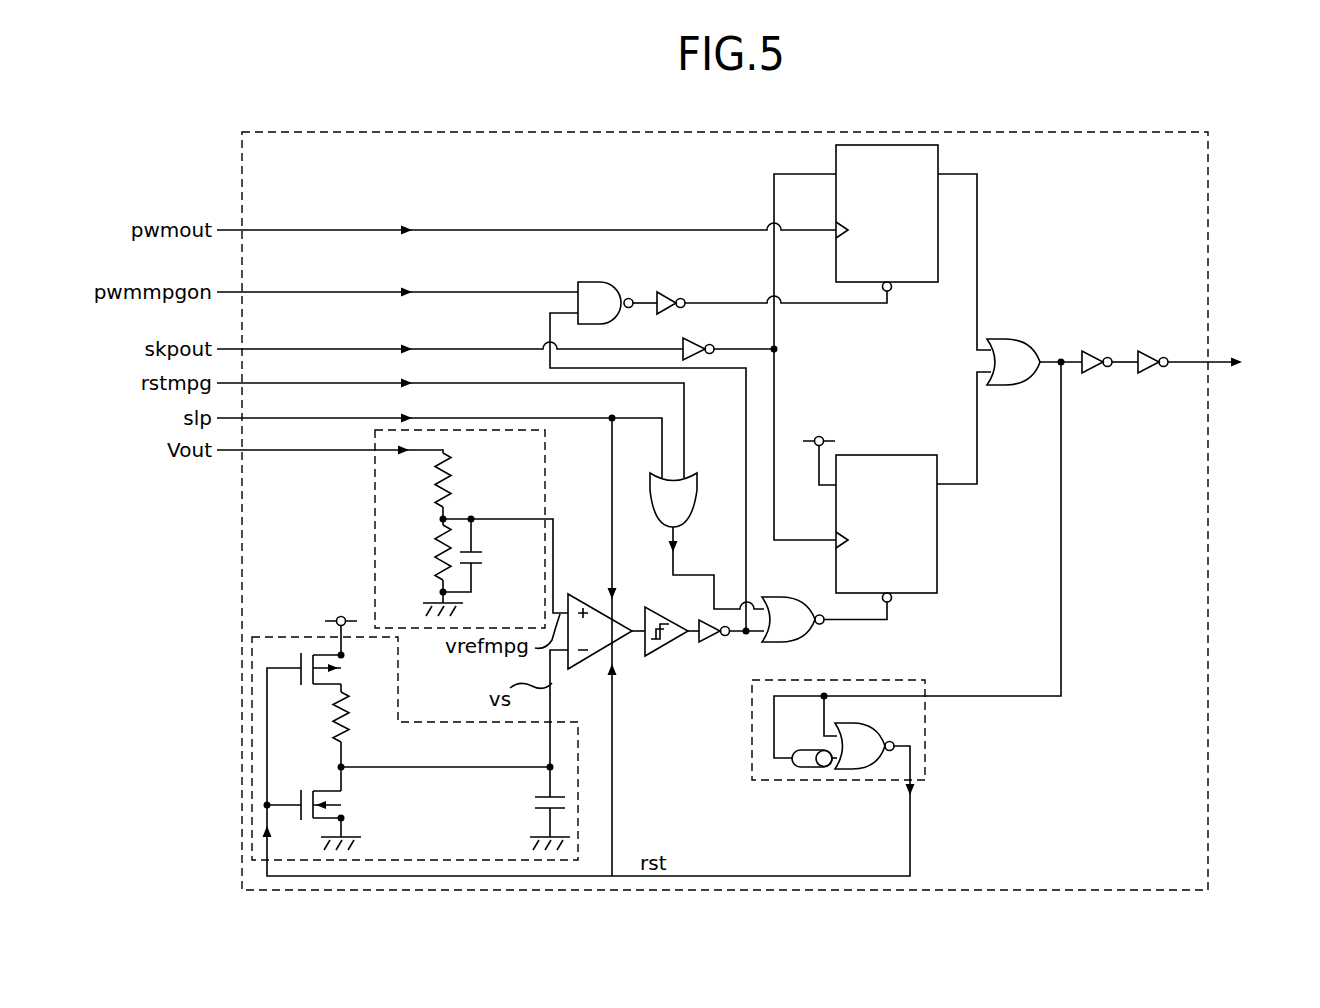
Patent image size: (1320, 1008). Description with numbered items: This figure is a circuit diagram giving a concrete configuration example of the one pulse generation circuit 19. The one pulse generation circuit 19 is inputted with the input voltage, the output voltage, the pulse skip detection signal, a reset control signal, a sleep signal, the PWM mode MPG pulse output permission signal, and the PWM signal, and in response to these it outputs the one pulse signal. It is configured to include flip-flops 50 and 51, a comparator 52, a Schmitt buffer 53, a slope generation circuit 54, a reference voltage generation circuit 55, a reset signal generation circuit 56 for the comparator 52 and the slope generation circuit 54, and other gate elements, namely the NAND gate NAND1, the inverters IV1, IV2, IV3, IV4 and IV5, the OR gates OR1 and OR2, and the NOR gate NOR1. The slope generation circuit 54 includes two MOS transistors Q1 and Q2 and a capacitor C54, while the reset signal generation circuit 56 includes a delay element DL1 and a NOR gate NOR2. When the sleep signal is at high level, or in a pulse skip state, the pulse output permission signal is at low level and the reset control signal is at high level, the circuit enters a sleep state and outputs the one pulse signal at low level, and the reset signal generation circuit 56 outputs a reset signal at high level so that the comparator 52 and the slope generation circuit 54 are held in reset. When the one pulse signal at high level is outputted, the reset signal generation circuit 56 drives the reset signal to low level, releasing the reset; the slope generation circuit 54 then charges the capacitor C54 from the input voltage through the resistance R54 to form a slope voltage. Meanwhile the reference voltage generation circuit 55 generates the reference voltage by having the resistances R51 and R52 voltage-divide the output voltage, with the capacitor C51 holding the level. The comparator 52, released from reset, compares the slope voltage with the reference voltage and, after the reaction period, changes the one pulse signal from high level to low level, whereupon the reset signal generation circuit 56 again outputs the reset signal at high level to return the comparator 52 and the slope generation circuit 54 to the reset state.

The one pulse generation circuit 19 is at (386, 132).
The flip-flop 50 is at (912, 455).
The flip-flop 51 is at (920, 287).
The comparator 52 is at (593, 598).
The Schmitt buffer 53 is at (668, 646).
The slope generation circuit 54 is at (415, 716).
The reference voltage generation circuit 55 is at (483, 529).
The reset signal generation circuit 56 is at (627, 778).
The NAND gate NAND1 is at (593, 282).
The inverter IV1 is at (666, 291).
The inverter IV2 is at (696, 338).
The inverter IV3 is at (719, 637).
The inverter IV4 is at (1094, 351).
The inverter IV5 is at (1157, 351).
The OR gate OR1 is at (697, 493).
The OR gate OR2 is at (992, 339).
The NOR gate NOR1 is at (812, 637).
The NOR gate NOR2 is at (857, 773).
The delay element DL1 is at (808, 770).
The resistance R51 is at (420, 480).
The resistance R52 is at (420, 552).
The capacitor C51 is at (488, 555).
The resistance R54 is at (318, 717).
The capacitor C54 is at (530, 808).
The MOS transistor Q1 is at (322, 729).
The MOS transistor Q2 is at (321, 806).